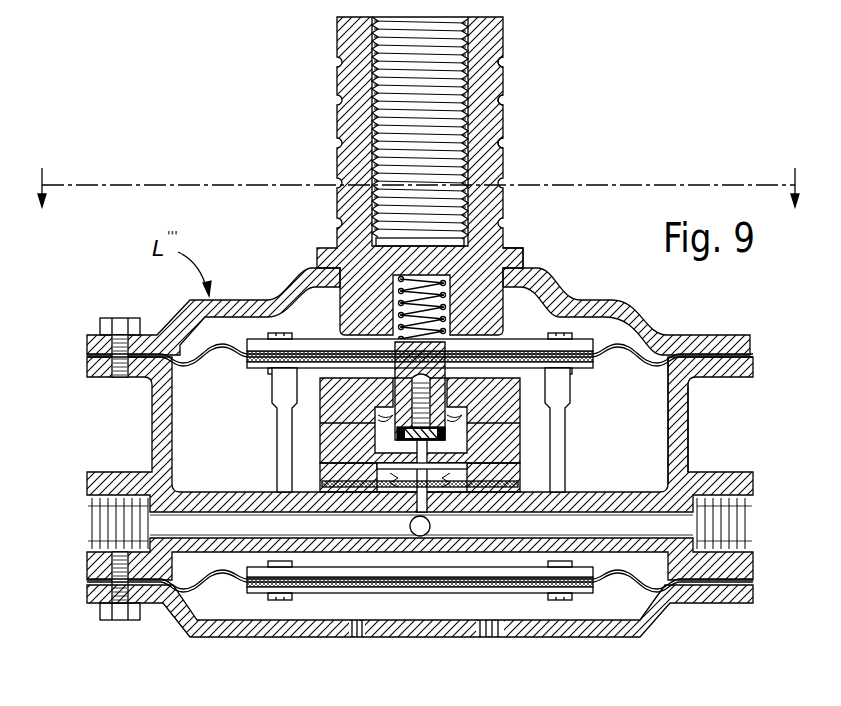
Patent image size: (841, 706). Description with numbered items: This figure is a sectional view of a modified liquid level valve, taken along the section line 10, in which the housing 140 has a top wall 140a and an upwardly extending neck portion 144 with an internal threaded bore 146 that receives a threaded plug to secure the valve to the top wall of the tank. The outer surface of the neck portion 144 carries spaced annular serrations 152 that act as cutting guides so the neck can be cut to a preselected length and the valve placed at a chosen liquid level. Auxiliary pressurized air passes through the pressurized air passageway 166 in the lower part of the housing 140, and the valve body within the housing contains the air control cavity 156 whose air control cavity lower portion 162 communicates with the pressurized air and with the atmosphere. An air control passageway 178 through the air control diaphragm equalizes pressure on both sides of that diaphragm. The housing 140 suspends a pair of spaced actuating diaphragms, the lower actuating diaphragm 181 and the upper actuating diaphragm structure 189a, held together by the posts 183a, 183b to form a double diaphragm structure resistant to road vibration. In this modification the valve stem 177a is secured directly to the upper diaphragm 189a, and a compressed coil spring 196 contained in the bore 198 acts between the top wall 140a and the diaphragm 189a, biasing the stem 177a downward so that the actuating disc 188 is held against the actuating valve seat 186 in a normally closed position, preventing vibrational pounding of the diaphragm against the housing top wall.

The section line 10 is at (420, 206).
The neck portion 144 is at (337, 129).
The internal threaded bore 146 is at (378, 168).
The annular serrations 152 is at (503, 101).
The compressed coil spring 196 is at (505, 251).
The bore 198 is at (436, 284).
The top wall 140a is at (552, 273).
The upper actuating diaphragm structure 189a is at (522, 346).
The pressurized air passageway 166 is at (150, 478).
The housing 140 is at (690, 433).
The post 183a is at (276, 386).
The post 183b is at (566, 469).
The air control cavity lower portion 162 is at (522, 491).
The air control passageway 178 is at (455, 648).
The valve stem 177a is at (432, 386).
The actuating disc 188 is at (446, 434).
The actuating valve seat 186 is at (397, 439).
The air control cavity 156 is at (385, 481).
The actuating diaphragm 181 is at (204, 592).